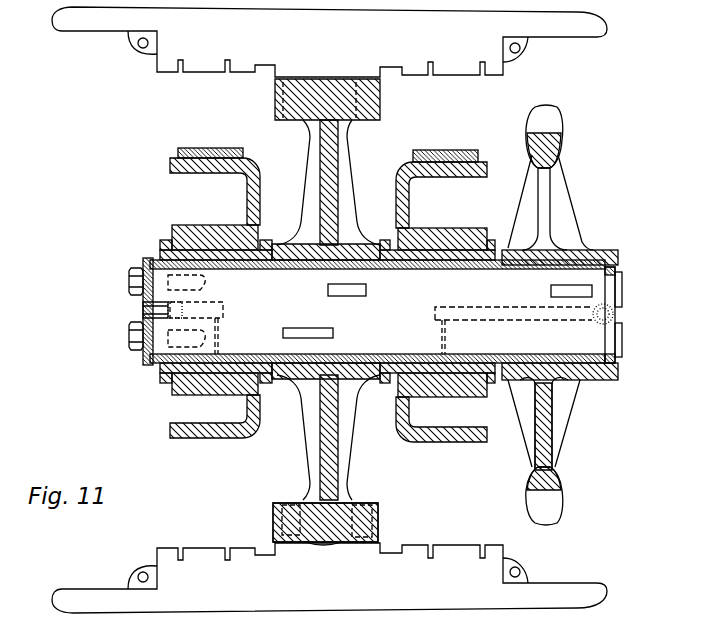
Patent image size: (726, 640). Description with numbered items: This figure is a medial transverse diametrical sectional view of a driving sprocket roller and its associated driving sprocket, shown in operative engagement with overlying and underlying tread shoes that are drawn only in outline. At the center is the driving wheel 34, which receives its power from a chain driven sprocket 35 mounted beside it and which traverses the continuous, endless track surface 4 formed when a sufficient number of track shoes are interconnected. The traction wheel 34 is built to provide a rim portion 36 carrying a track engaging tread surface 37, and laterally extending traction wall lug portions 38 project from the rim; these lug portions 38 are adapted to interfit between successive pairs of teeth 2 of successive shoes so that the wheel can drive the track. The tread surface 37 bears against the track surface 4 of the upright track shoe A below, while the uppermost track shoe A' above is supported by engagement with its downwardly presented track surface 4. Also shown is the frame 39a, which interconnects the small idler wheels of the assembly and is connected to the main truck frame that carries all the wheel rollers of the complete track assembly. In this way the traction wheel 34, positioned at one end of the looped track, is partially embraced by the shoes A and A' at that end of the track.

The teeth 2 is at (292, 507).
The track surface 4 is at (328, 550).
The driving wheel 34 is at (328, 175).
The chain driven sprocket 35 is at (556, 150).
The rim portion 36 is at (332, 515).
The track engaging tread surface 37 is at (328, 547).
The laterally extending traction wall lug portions 38 is at (275, 513).
The frame 39a is at (195, 440).
The track shoe A is at (322, 578).
The uppermost track shoe A' is at (321, 42).